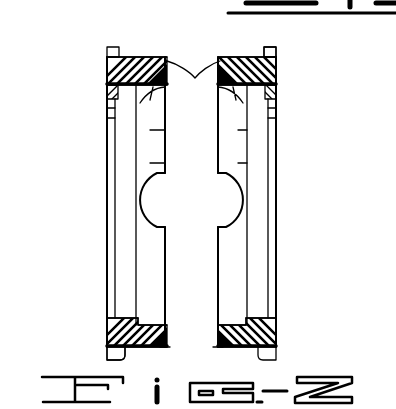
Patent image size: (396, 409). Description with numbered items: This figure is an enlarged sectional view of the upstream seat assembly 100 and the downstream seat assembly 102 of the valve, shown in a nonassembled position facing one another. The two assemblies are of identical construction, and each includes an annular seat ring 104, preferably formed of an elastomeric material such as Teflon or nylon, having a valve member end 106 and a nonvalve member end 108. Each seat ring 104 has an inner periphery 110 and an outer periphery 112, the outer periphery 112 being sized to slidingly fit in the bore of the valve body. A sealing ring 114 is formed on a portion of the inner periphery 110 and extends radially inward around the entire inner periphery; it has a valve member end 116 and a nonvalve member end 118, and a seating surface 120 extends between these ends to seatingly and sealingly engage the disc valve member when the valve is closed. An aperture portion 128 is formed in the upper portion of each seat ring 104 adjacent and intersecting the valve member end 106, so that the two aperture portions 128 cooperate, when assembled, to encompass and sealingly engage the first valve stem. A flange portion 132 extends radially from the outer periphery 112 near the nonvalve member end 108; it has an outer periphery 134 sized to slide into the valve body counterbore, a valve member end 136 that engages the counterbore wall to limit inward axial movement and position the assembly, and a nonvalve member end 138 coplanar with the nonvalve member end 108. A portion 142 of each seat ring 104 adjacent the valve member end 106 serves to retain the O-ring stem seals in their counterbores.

The upstream seat assembly 100 is at (148, 48).
The downstream seat assembly 102 is at (240, 48).
The seat ring 104 is at (165, 102).
The valve member end 106 is at (222, 83).
The nonvalve member end 108 is at (107, 80).
The inner periphery 110 is at (155, 97).
The outer periphery 112 is at (233, 57).
The sealing ring 114 is at (110, 112).
The valve member end 116 is at (252, 318).
The nonvalve member end 118 is at (113, 318).
The seating surface 120 is at (128, 315).
The aperture portion 128 is at (158, 175).
The flange portion 132 is at (110, 335).
The outer periphery 134 is at (110, 350).
The valve member end 136 is at (264, 48).
The nonvalve member end 138 is at (107, 52).
The portion of seat ring 142 is at (218, 350).